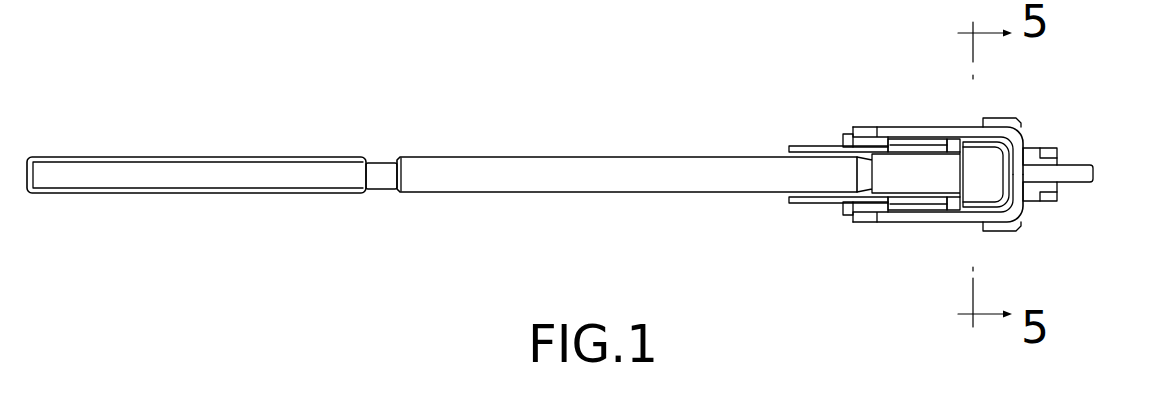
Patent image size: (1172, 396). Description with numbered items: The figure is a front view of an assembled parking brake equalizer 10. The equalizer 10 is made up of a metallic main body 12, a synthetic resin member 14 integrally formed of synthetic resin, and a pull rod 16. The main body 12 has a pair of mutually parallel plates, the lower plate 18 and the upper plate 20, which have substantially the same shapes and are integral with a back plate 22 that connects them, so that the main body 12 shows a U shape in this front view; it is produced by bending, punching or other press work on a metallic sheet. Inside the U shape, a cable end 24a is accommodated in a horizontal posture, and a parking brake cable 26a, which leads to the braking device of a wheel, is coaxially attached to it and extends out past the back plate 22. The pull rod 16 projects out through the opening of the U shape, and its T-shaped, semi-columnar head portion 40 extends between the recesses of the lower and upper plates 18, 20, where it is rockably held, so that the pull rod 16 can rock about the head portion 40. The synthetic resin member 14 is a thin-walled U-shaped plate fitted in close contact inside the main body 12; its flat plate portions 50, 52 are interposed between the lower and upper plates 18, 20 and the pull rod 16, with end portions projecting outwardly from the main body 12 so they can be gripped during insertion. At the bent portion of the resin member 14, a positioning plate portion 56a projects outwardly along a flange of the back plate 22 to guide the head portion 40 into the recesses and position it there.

The equalizer 10 is at (1063, 67).
The main body 12 is at (863, 100).
The synthetic resin member 14 is at (794, 224).
The pull rod 16 is at (541, 175).
The lower plate 18 is at (910, 215).
The upper plate 20 is at (913, 128).
The back plate 22 is at (1024, 153).
The cable end 24a is at (983, 185).
The parking brake cable 26a is at (1080, 181).
The head portion 40 is at (1007, 118).
The flat plate portion 50 is at (825, 203).
The flat plate portion 52 is at (827, 147).
The positioning plate portion 56a is at (1039, 201).